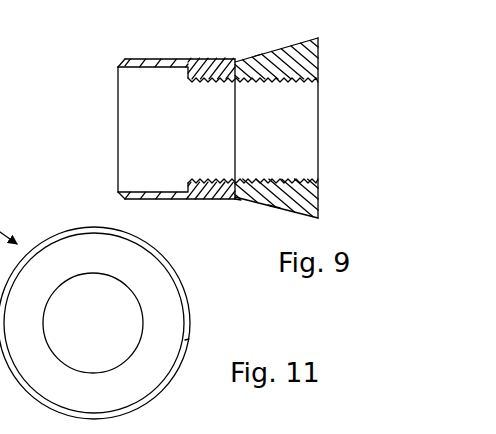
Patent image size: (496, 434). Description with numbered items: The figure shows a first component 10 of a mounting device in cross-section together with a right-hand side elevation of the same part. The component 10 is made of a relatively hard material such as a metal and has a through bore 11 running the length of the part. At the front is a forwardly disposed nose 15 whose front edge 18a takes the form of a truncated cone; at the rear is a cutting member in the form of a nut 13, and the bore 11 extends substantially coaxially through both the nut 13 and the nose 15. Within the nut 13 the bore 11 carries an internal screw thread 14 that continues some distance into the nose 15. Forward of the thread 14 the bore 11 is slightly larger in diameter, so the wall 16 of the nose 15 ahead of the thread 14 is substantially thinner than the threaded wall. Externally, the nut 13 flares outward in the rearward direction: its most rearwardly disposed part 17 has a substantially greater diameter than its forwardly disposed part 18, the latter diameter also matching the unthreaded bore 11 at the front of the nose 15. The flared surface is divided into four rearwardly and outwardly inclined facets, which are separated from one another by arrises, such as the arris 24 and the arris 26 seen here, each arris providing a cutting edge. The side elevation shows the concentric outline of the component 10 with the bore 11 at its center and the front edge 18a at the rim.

In FIG. 9, the first component 10 is at (100, 63).
In FIG. 9, the through bore 11 is at (296, 130).
In FIG. 11, the through bore 11 is at (105, 334).
In FIG. 9, the nut 13 is at (280, 42).
In FIG. 9, the internal screw thread 14 is at (212, 84).
In FIG. 9, the nose 15 is at (160, 59).
In FIG. 9, the wall 16 is at (152, 192).
In FIG. 9, the most rearwardly disposed part 17 is at (318, 216).
In FIG. 9, the forwardly disposed part 18 is at (240, 200).
In FIG. 9, the front edge 18a is at (125, 199).
In FIG. 11, the front edge 18a is at (185, 340).
In FIG. 9, the arris 24 is at (280, 208).
In FIG. 9, the arris 26 is at (262, 54).